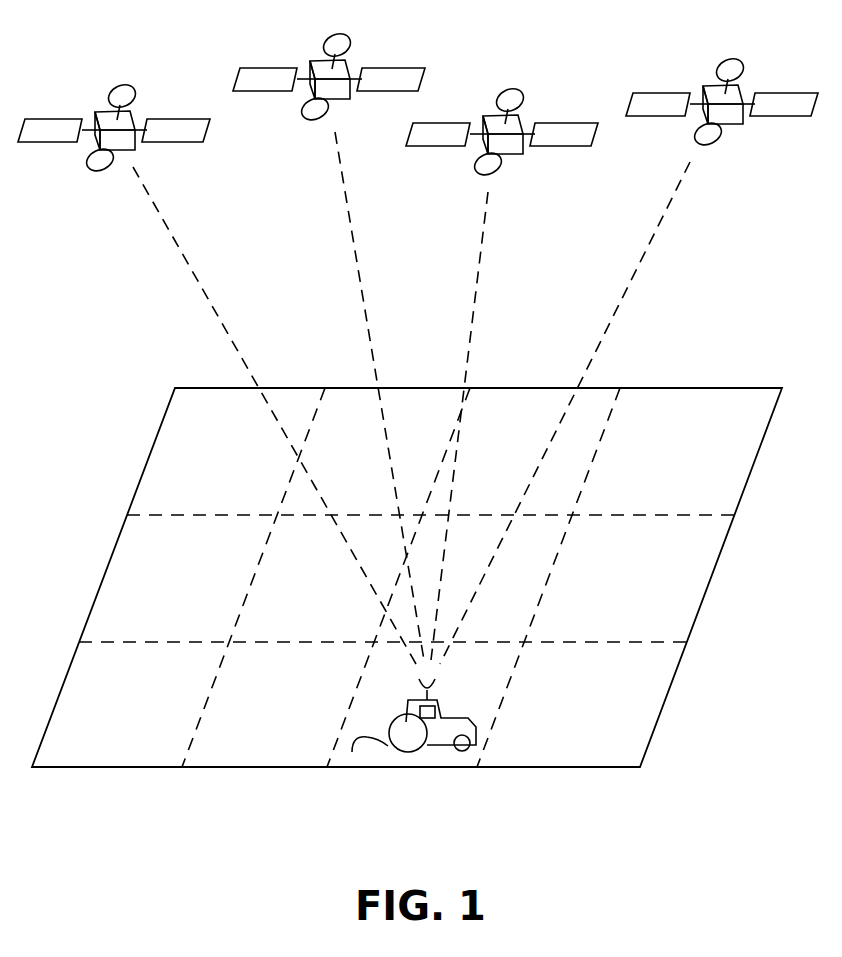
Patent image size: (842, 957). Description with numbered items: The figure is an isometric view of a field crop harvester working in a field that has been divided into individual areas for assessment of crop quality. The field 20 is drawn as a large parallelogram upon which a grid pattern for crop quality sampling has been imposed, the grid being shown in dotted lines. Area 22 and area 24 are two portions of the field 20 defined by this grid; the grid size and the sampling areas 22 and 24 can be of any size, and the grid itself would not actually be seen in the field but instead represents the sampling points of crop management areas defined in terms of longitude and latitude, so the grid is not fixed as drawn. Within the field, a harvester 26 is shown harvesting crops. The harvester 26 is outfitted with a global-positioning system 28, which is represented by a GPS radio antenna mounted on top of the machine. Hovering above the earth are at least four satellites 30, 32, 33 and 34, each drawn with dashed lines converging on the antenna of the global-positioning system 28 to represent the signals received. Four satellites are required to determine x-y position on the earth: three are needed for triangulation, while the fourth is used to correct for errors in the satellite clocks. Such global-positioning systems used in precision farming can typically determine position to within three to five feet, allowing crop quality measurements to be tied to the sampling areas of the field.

The field 20 is at (510, 380).
The area 22 is at (214, 467).
The area 24 is at (648, 595).
The harvester 26 is at (406, 702).
The global-positioning system 28 is at (442, 687).
The satellite 30 is at (183, 120).
The satellite 32 is at (398, 68).
The satellite 33 is at (573, 123).
The satellite 34 is at (792, 93).